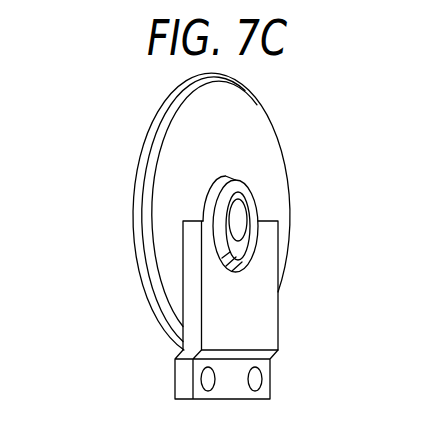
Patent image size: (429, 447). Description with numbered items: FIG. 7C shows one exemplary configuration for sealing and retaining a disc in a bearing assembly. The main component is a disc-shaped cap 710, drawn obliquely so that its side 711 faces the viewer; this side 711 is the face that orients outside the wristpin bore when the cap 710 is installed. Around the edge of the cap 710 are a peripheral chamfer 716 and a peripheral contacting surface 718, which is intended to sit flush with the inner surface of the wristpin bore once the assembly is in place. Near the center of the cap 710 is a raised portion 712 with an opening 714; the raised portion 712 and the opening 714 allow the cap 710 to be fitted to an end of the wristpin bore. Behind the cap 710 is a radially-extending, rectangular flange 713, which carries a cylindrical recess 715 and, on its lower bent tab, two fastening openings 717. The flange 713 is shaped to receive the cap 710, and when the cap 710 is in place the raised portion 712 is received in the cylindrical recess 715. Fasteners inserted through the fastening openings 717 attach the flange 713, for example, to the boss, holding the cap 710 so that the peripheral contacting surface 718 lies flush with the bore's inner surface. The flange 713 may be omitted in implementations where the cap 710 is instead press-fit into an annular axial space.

The disc-shaped cap 710 is at (82, 155).
The side 711 is at (238, 118).
The raised portion 712 is at (242, 193).
The radially-extending rectangular flange 713 is at (240, 297).
The opening 714 is at (240, 218).
The cylindrical recess 715 is at (270, 237).
The peripheral chamfer 716 is at (147, 227).
The fastening openings 717 is at (255, 379).
The peripheral contacting surface 718 is at (140, 287).